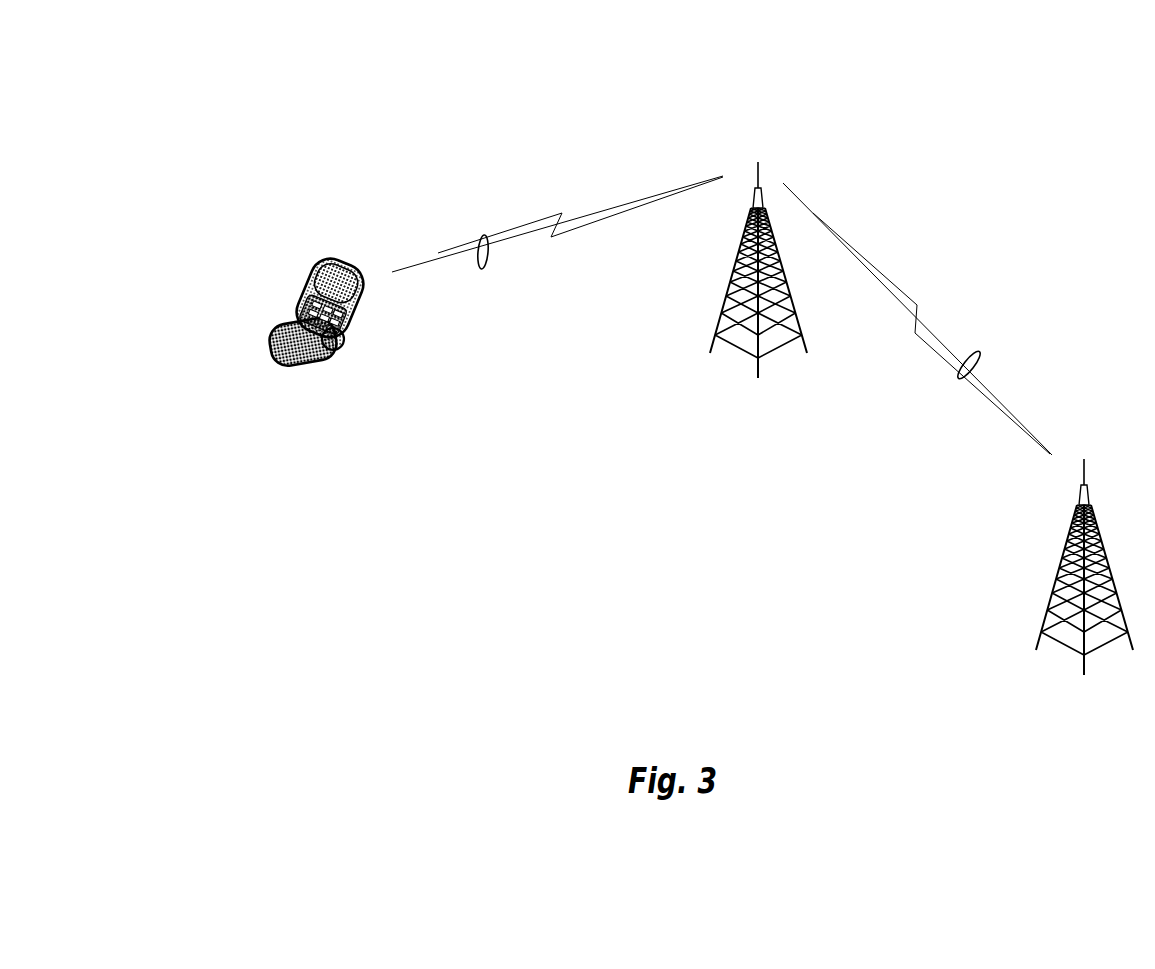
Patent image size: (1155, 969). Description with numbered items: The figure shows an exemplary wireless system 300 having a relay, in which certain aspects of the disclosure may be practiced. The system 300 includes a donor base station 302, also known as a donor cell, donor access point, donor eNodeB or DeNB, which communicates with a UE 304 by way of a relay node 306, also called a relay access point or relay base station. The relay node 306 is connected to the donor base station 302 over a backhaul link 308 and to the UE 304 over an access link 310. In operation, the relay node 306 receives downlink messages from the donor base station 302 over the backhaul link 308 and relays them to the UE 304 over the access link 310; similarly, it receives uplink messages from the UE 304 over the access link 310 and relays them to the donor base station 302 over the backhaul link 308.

The wireless system 300 is at (417, 72).
The donor base station 302 is at (1066, 556).
The UE 304 is at (307, 299).
The relay node 306 is at (738, 256).
The backhaul link 308 is at (958, 379).
The access link 310 is at (484, 268).